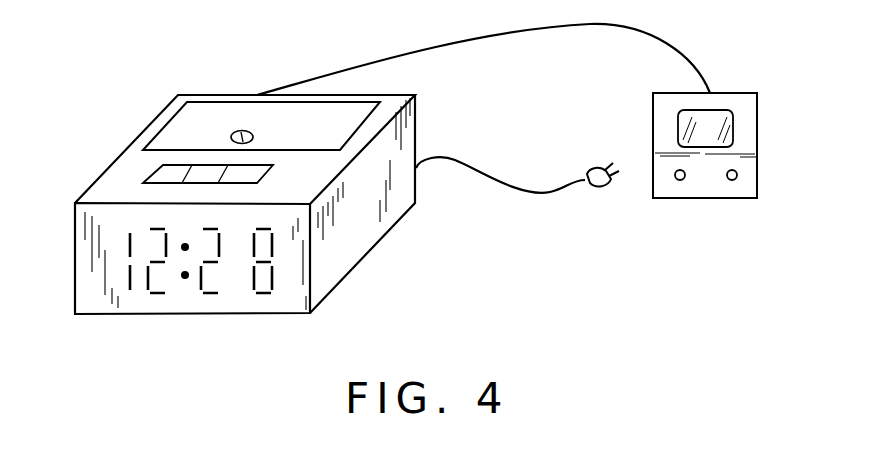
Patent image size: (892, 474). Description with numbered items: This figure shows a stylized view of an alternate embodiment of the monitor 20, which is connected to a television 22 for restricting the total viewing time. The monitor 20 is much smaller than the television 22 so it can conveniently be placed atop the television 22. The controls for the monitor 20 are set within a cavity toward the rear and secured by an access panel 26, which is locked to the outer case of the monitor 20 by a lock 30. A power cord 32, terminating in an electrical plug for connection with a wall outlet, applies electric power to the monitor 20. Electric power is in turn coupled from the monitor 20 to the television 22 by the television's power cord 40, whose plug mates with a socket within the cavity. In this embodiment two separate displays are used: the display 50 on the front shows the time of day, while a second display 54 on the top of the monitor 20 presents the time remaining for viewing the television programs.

The monitor 20 is at (260, 323).
The television 22 is at (732, 198).
The access panel 26 is at (202, 107).
The lock 30 is at (253, 137).
The power cord 32 is at (517, 185).
The power cord 40 is at (562, 32).
The display 50 is at (173, 307).
The second display 54 is at (150, 180).